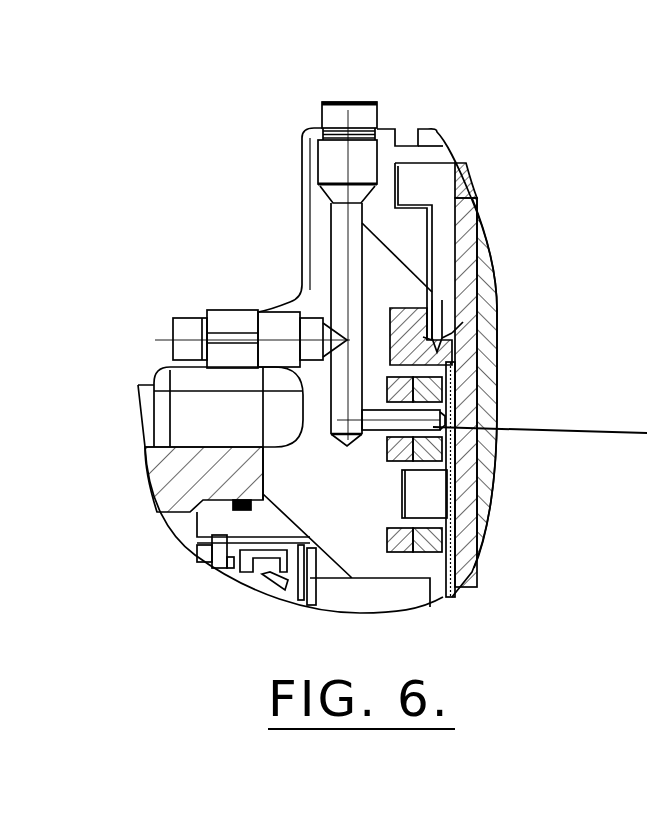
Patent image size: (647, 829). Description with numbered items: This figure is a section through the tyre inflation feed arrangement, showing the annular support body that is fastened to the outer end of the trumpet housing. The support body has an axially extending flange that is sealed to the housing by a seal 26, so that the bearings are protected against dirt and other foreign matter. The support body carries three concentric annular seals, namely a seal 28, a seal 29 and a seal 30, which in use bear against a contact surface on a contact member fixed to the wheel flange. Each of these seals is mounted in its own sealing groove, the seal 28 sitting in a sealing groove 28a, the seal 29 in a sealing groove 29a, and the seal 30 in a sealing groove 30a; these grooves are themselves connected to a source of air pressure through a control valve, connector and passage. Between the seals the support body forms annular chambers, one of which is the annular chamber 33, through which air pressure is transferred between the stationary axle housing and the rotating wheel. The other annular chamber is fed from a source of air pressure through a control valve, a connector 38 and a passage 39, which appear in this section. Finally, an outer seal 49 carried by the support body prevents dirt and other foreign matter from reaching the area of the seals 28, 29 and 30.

The seal 26 is at (392, 370).
The annular seal 28 is at (437, 387).
The sealing groove 28a is at (440, 364).
The annular seal 29 is at (450, 460).
The sealing groove 29a is at (433, 432).
The annular seal 30 is at (432, 553).
The sealing groove 30a is at (453, 567).
The annular chamber 33 is at (430, 500).
The connector 38 is at (237, 323).
The passage 39 is at (347, 245).
The outer seal 49 is at (400, 333).